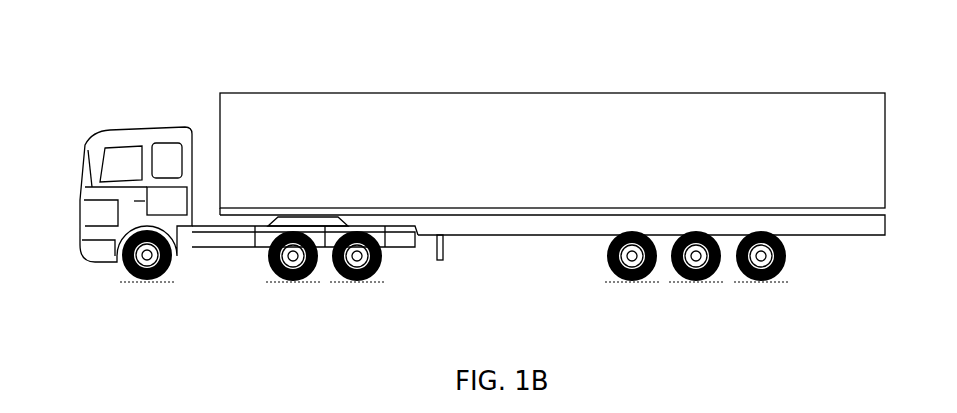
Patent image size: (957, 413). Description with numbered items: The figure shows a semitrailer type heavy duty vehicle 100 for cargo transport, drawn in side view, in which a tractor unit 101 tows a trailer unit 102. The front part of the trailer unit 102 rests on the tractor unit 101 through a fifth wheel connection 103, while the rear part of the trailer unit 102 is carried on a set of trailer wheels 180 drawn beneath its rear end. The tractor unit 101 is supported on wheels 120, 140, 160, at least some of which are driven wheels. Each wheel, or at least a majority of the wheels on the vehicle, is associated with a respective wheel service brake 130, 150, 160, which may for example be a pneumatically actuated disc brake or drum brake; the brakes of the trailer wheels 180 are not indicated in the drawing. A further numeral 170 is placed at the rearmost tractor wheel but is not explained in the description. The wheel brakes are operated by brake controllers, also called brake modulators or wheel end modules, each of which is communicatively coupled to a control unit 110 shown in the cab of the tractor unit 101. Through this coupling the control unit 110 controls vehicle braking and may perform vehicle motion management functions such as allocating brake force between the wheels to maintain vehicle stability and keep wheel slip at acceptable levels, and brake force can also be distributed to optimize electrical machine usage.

The vehicle 100 is at (138, 45).
The tractor unit 101 is at (128, 129).
The trailer unit 102 is at (408, 101).
The fifth wheel connection 103 is at (305, 218).
The control unit 110 is at (167, 201).
The wheel 120 is at (133, 286).
The wheel service brake 130 is at (153, 279).
The wheel 140 is at (275, 283).
The wheel service brake 150 is at (300, 280).
The wheel 160 is at (341, 283).
The third wheel 170 is at (366, 283).
The trailer wheels 180 is at (757, 303).